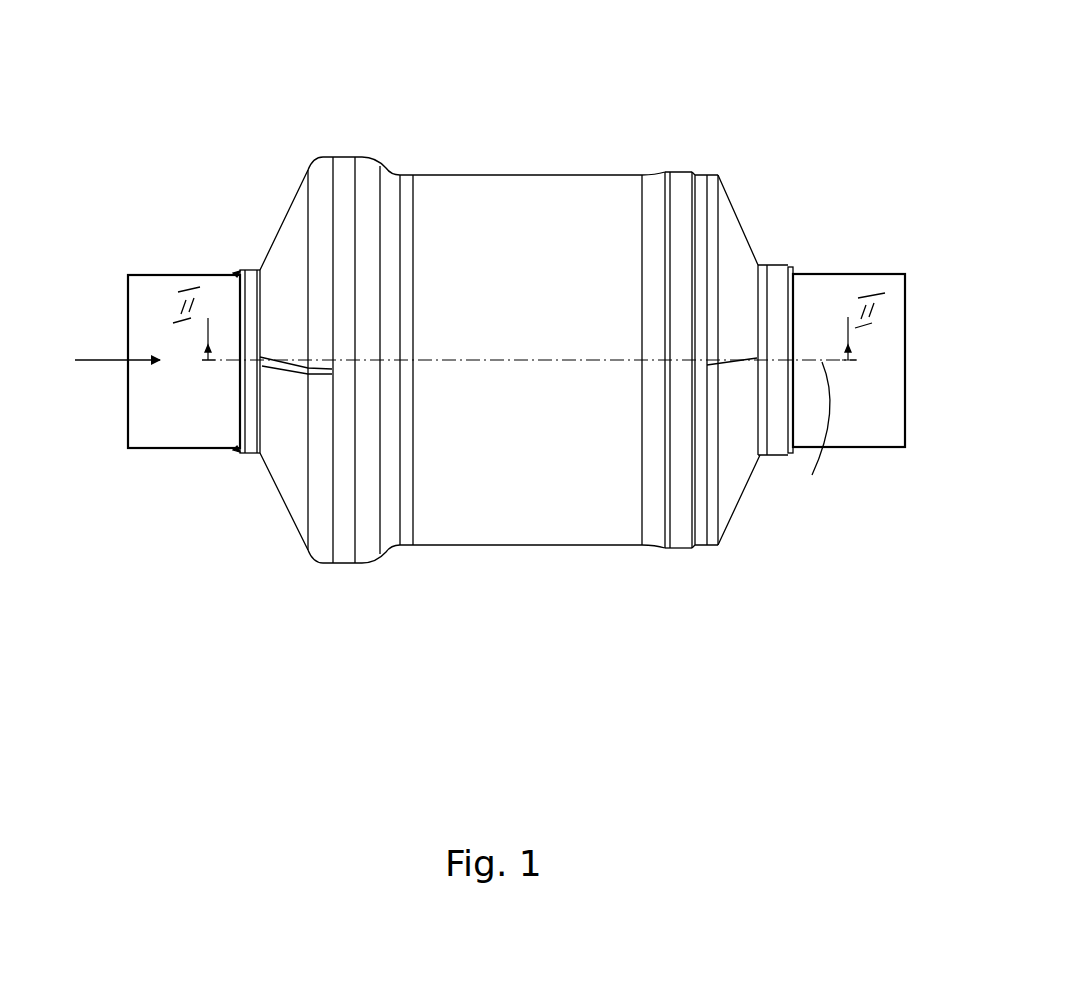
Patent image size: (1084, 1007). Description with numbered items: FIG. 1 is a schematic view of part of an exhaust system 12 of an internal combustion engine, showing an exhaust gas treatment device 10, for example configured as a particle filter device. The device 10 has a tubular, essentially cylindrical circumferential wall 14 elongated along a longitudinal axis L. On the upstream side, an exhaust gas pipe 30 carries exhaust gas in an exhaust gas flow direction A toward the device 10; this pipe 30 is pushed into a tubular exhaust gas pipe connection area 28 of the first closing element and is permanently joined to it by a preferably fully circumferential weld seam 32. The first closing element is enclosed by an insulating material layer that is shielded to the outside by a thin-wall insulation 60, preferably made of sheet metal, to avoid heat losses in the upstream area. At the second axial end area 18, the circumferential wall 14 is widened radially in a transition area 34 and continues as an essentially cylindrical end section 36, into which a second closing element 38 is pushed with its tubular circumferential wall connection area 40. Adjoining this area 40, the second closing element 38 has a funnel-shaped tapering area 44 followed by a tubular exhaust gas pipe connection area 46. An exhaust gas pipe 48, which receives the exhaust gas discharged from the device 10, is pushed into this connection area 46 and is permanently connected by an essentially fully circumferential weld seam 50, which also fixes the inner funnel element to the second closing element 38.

The exhaust gas treatment device 10 is at (512, 157).
The exhaust system 12 is at (772, 100).
The circumferential wall 14 is at (483, 548).
The second axial end area 18 is at (663, 150).
The exhaust gas pipe connection area 28 is at (240, 270).
The exhaust gas pipe 30 is at (125, 295).
The weld seam 32 is at (237, 452).
The transition area 34 is at (658, 550).
The end section 36 is at (682, 170).
The second closing element 38 is at (730, 207).
The circumferential wall connection area 40 is at (700, 550).
The tapering area 44 is at (737, 507).
The exhaust gas pipe connection area 46 is at (777, 265).
The exhaust gas pipe 48 is at (905, 331).
The weld seam 50 is at (795, 268).
The thin-wall insulation 60 is at (295, 197).
The exhaust gas flow direction A is at (75, 362).
The longitudinal axis L is at (817, 443).